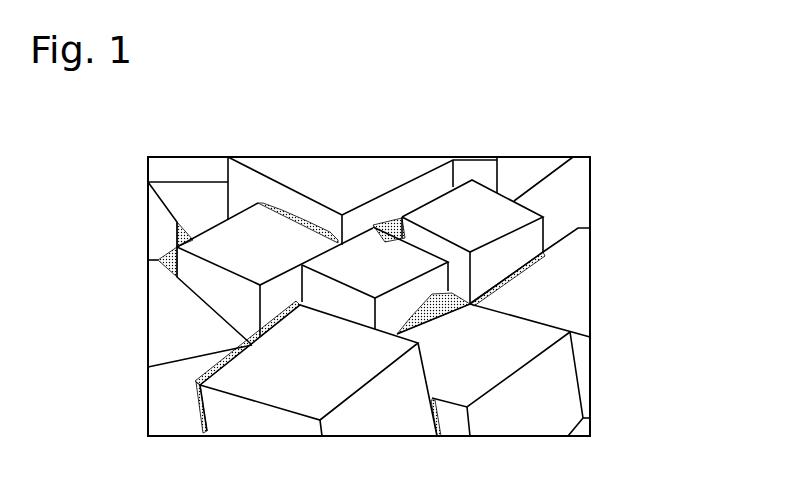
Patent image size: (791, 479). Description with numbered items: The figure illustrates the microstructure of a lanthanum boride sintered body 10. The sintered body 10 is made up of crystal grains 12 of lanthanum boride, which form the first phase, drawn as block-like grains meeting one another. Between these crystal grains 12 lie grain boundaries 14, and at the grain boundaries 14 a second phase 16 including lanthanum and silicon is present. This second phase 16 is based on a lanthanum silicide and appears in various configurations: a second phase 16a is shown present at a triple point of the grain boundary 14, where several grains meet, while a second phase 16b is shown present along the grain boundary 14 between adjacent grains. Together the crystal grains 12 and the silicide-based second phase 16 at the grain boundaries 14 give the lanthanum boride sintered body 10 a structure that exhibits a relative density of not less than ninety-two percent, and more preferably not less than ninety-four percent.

The lanthanum boride sintered body 10 is at (545, 139).
The crystal grains 12 is at (413, 380).
The grain boundaries 14 is at (448, 262).
The second phase 16 is at (562, 251).
The second phase present at a triple point of grain boundary 16a is at (415, 221).
The second phase present along the grain boundary 16b is at (571, 279).